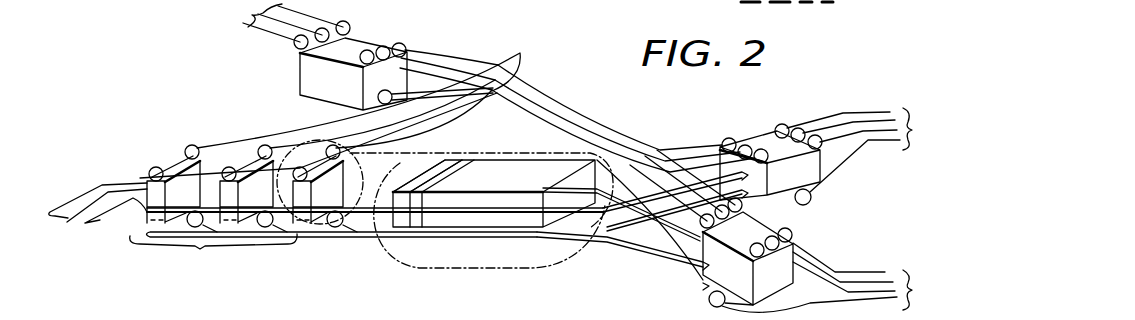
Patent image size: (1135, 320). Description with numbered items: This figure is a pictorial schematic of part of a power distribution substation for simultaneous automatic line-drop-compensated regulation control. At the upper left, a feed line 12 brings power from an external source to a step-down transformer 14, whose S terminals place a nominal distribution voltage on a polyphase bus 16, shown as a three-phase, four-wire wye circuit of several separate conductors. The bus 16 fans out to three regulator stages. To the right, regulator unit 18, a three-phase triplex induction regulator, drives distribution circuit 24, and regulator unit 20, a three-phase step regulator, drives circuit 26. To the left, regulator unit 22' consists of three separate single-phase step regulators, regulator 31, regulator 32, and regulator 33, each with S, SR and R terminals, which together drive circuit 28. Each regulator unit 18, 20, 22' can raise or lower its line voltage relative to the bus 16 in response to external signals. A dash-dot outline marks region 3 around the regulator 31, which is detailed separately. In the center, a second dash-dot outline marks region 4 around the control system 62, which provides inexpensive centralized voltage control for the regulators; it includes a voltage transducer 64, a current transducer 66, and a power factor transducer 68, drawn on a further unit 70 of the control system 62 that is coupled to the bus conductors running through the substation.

The circuit breaker module detail region 3 is at (308, 142).
The bus bar assembly detail region 4 is at (395, 271).
The feed line 12 is at (285, 22).
The step-down transformer 14 is at (350, 65).
The bus 16 is at (577, 108).
The regulator unit 18 is at (771, 164).
The regulator unit 20 is at (746, 252).
The regulator unit 22' is at (333, 251).
The circuit 24 is at (859, 150).
The circuit 26 is at (827, 277).
The circuit 28 is at (97, 218).
The regulator 31 is at (325, 188).
The regulator 32 is at (253, 188).
The regulator 33 is at (182, 188).
The control system 62 is at (441, 229).
The voltage transducer 64 is at (462, 154).
The current transducer 66 is at (422, 158).
The power factor transducer 68 is at (400, 178).
The bus bar housing 70 is at (494, 193).